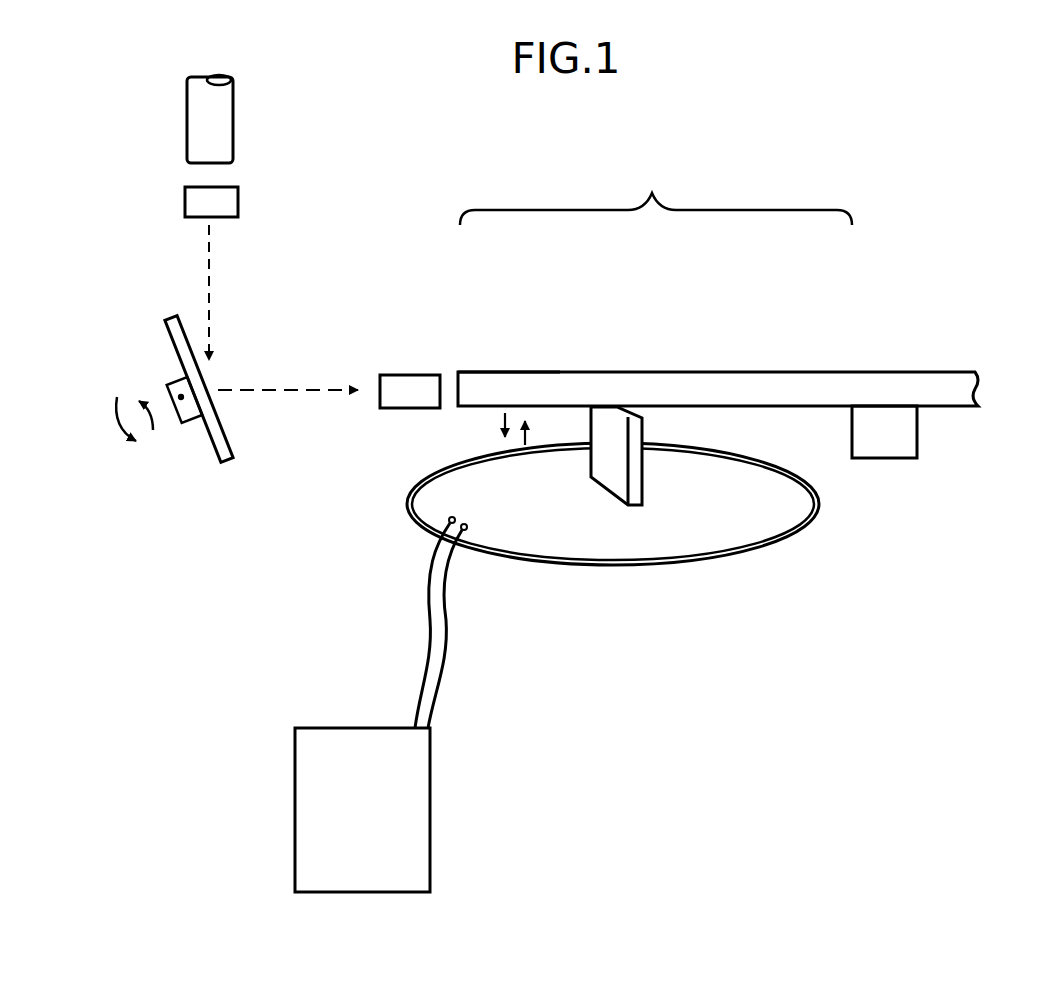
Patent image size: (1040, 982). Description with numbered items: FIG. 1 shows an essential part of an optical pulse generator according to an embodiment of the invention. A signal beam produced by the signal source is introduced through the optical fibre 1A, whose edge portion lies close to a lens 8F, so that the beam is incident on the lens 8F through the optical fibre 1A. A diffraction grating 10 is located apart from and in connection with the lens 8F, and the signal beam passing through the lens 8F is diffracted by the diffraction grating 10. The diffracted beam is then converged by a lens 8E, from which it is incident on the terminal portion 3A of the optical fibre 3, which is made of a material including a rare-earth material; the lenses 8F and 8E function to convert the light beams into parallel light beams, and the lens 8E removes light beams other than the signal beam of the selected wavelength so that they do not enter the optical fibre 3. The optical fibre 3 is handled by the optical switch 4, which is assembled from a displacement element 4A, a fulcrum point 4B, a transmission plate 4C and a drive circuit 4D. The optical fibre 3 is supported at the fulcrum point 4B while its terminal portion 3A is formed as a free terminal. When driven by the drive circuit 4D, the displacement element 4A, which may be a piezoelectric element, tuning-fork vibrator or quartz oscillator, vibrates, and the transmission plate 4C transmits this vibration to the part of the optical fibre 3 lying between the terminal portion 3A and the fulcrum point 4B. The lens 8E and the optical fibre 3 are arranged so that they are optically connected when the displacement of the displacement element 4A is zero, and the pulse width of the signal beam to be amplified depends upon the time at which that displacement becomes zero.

The optical fibre 1A is at (235, 122).
The lens 8F is at (240, 203).
The diffraction grating 10 is at (226, 463).
The lens 8E is at (415, 372).
The optical fibre 3 is at (915, 370).
The terminal portion 3A is at (516, 371).
The optical switch 4 is at (656, 193).
The displacement element 4A is at (718, 530).
The fulcrum point 4B is at (903, 458).
The transmission plate 4C is at (618, 485).
The drive circuit 4D is at (432, 818).